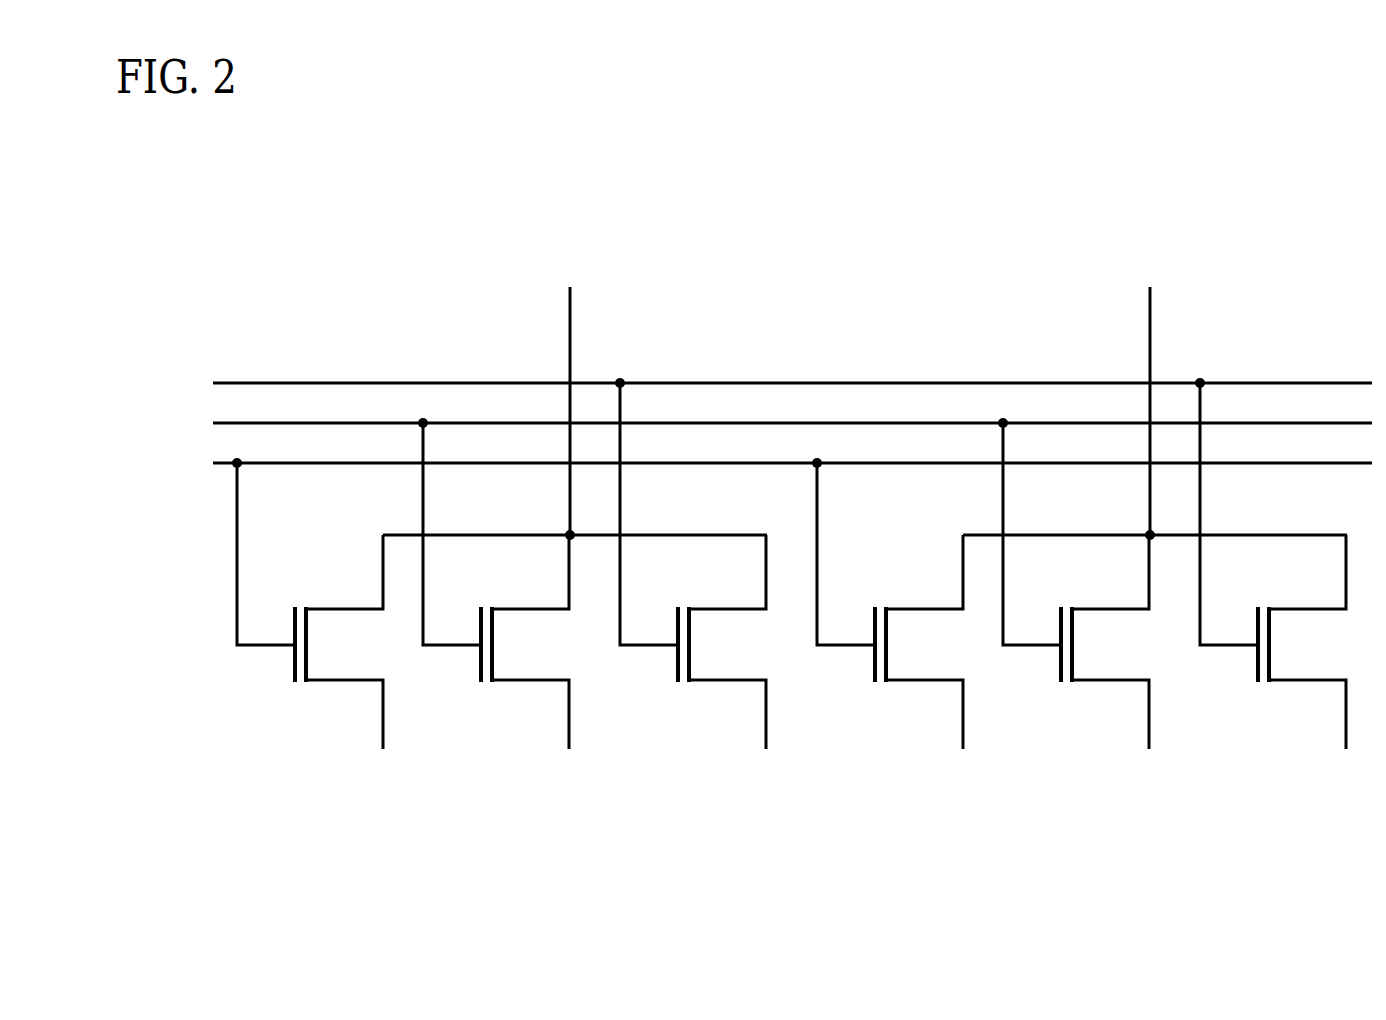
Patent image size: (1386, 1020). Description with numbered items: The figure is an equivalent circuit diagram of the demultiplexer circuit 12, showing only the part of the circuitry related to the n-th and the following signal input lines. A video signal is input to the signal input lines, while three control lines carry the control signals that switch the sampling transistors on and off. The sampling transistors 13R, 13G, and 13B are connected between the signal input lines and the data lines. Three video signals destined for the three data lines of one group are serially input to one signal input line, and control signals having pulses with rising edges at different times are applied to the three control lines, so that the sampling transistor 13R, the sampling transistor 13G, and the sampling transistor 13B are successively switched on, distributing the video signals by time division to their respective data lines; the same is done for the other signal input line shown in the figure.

The demultiplexer circuit 12 is at (825, 232).
The sampling transistor 13R is at (316, 718).
The sampling transistor 13G is at (516, 718).
The sampling transistor 13B is at (709, 718).